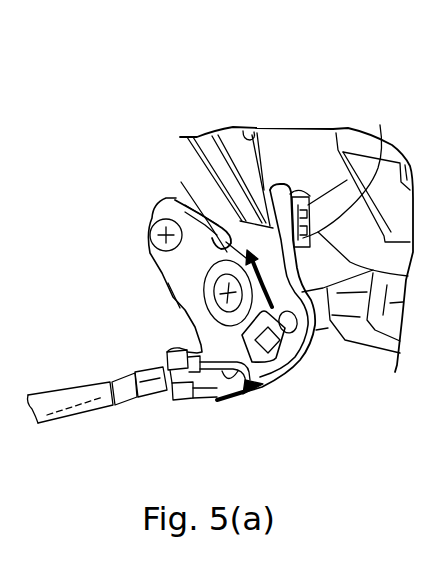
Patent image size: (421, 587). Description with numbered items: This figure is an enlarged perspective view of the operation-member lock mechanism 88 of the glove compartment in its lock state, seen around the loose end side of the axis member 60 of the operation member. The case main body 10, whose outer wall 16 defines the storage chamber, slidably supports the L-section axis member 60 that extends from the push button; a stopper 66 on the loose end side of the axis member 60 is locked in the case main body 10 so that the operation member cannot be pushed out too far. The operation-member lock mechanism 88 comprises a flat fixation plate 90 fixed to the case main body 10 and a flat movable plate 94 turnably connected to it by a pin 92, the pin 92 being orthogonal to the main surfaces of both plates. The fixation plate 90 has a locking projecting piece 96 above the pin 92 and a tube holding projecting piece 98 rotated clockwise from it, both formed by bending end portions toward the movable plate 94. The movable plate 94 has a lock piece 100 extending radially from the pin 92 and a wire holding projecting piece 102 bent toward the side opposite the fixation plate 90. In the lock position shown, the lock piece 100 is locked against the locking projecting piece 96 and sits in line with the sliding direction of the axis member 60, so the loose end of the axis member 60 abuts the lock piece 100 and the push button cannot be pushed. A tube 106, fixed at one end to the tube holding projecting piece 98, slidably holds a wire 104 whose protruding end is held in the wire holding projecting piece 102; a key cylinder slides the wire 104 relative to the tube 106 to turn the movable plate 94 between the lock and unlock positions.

The case main body 10 is at (343, 116).
The outer wall 16 is at (308, 147).
The axis member 60 is at (381, 125).
The stopper 66 is at (272, 182).
The operation-member lock mechanism 88 is at (158, 189).
The fixation plate 90 is at (163, 270).
The pin 92 is at (205, 303).
The movable plate 94 is at (313, 340).
The locking projecting piece 96 is at (190, 202).
The tube holding projecting piece 98 is at (182, 400).
The lock piece 100 is at (250, 130).
The wire holding projecting piece 102 is at (268, 362).
The wire 104 is at (203, 394).
The tube 106 is at (71, 404).